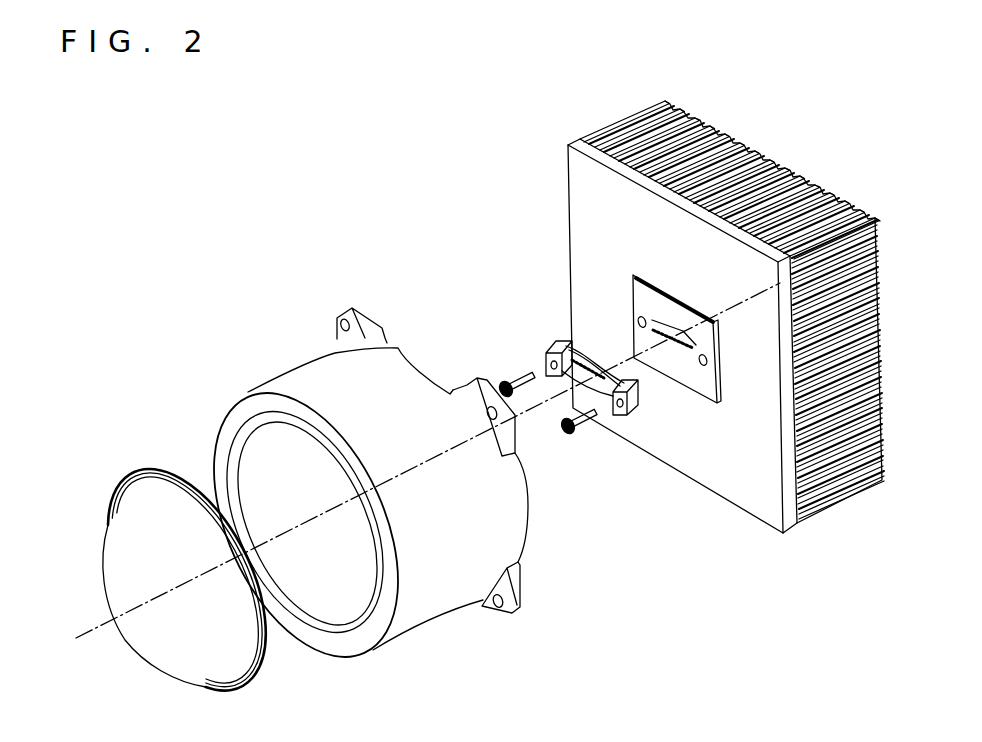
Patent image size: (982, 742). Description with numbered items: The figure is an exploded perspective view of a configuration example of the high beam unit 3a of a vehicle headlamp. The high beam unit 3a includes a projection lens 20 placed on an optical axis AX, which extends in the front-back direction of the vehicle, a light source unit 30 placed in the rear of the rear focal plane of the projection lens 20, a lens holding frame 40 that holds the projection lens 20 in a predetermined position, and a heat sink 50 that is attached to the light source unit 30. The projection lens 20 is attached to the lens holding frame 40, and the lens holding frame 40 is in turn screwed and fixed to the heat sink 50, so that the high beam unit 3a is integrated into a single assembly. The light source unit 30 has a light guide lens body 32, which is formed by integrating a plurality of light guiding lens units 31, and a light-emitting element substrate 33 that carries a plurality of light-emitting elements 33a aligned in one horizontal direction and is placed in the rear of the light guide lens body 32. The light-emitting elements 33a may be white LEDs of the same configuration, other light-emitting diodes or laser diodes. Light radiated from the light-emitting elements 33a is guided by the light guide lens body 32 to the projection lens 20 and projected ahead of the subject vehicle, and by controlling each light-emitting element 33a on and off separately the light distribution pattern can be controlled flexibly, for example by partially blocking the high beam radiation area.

The high beam unit 3a is at (436, 120).
The projection lens 20 is at (112, 552).
The lens holding frame 40 is at (297, 373).
The light source unit 30 is at (672, 224).
The light guiding lens unit 31 is at (598, 364).
The light guide lens body 32 is at (552, 348).
The light-emitting element substrate 33 is at (633, 300).
The light-emitting element 33a is at (695, 344).
The heat sink 50 is at (580, 140).
The optical axis AX is at (404, 474).